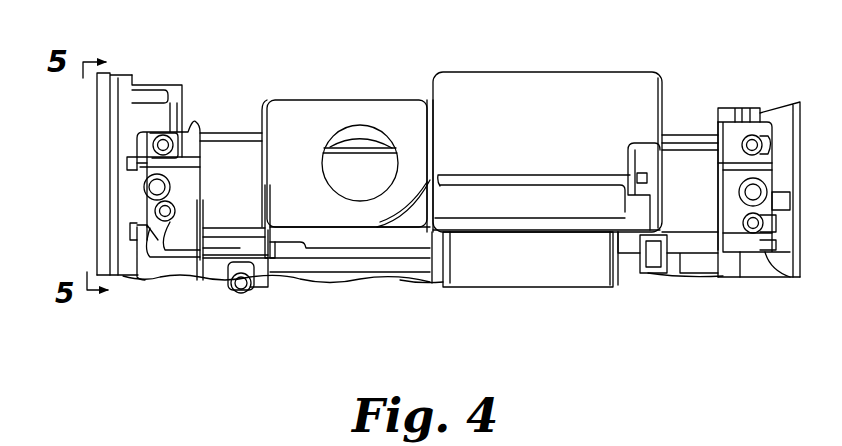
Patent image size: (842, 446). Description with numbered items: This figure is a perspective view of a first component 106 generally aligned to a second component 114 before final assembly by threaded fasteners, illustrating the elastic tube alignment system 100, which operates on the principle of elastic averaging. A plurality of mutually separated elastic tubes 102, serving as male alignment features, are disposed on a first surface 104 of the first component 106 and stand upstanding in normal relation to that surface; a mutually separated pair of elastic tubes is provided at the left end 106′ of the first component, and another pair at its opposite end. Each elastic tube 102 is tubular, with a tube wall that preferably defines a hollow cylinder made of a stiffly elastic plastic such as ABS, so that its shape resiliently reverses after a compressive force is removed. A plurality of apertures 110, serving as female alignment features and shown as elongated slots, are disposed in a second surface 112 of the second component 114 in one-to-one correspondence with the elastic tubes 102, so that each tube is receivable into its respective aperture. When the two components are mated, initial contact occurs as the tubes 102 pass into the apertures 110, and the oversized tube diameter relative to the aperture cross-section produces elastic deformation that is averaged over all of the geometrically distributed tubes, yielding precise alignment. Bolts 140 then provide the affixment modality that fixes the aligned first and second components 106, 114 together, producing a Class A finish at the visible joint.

The elastic tube alignment system 100 is at (163, 128).
The elastic tube alignment feature 102 is at (152, 153).
The first surface 104 is at (143, 231).
The first component 106 is at (164, 282).
The left end 106′ is at (182, 278).
The aperture alignment feature 110 is at (150, 144).
The second surface 112 is at (187, 277).
The second component 114 is at (338, 96).
The bolt 140 is at (172, 186).